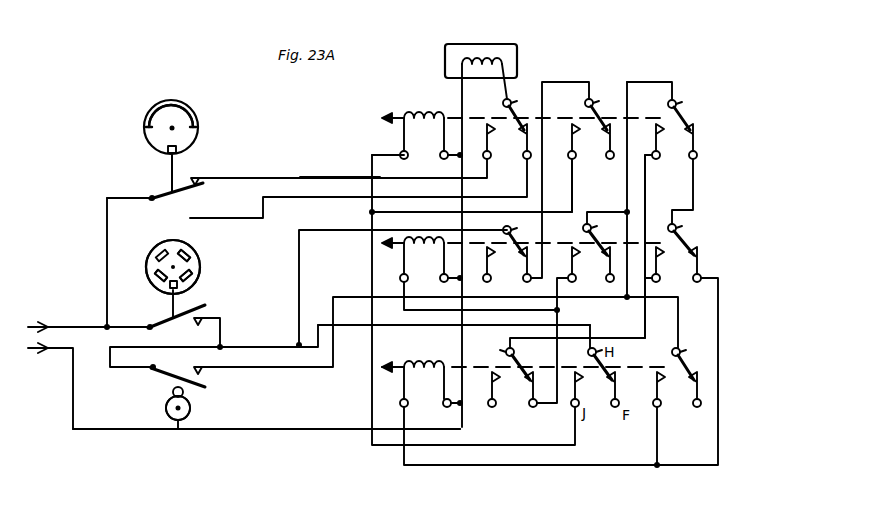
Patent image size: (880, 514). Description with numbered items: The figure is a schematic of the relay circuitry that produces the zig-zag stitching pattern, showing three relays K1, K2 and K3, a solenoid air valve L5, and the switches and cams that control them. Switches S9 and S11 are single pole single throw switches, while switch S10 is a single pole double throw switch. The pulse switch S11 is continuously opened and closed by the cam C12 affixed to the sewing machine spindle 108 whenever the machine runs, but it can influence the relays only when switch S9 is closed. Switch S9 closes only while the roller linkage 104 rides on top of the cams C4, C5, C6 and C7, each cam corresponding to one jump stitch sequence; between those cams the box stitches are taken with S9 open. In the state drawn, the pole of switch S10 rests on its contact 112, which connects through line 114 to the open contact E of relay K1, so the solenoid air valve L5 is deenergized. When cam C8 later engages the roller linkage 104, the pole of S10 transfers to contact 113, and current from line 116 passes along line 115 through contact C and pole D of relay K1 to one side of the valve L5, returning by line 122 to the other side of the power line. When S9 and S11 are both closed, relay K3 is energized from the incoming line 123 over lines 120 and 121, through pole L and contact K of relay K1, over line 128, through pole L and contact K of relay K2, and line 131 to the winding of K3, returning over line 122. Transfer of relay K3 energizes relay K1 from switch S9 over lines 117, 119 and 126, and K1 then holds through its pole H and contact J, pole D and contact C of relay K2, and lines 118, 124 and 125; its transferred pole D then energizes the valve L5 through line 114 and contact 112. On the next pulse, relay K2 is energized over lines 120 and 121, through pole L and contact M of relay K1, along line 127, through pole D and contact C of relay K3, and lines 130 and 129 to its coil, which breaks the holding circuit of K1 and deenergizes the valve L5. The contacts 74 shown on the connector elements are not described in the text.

The cam C8 is at (188, 108).
The connector contact 74 is at (190, 249).
The switch S10 is at (157, 189).
The roller linkage 104 is at (172, 299).
The contact 112 is at (207, 184).
The contact 113 is at (198, 221).
The line 114 is at (336, 176).
The line 115 is at (355, 199).
The line 116 is at (107, 247).
The cam C6 is at (162, 246).
The cam C7 is at (200, 263).
The cam C5 is at (152, 283).
The cam C4 is at (200, 286).
The incoming line 123 is at (82, 326).
The switch S9 is at (161, 334).
The line 117 is at (200, 350).
The line 119 is at (432, 329).
The pulse switch S11 is at (153, 378).
The line 120 is at (597, 299).
The cam C12 is at (192, 405).
The sewing machine spindle 108 is at (165, 407).
The line 122 is at (346, 432).
The line 118 is at (428, 230).
The solenoid air valve L5 is at (470, 44).
The relay K1 is at (451, 130).
The relay K2 is at (456, 256).
The relay K3 is at (459, 384).
The line 126 is at (380, 368).
The line 129 is at (405, 311).
The line 130 is at (557, 350).
The line 124 is at (583, 81).
The line 125 is at (572, 193).
The line 121 is at (627, 198).
The line 128 is at (694, 188).
The line 127 is at (650, 198).
The line 131 is at (718, 327).